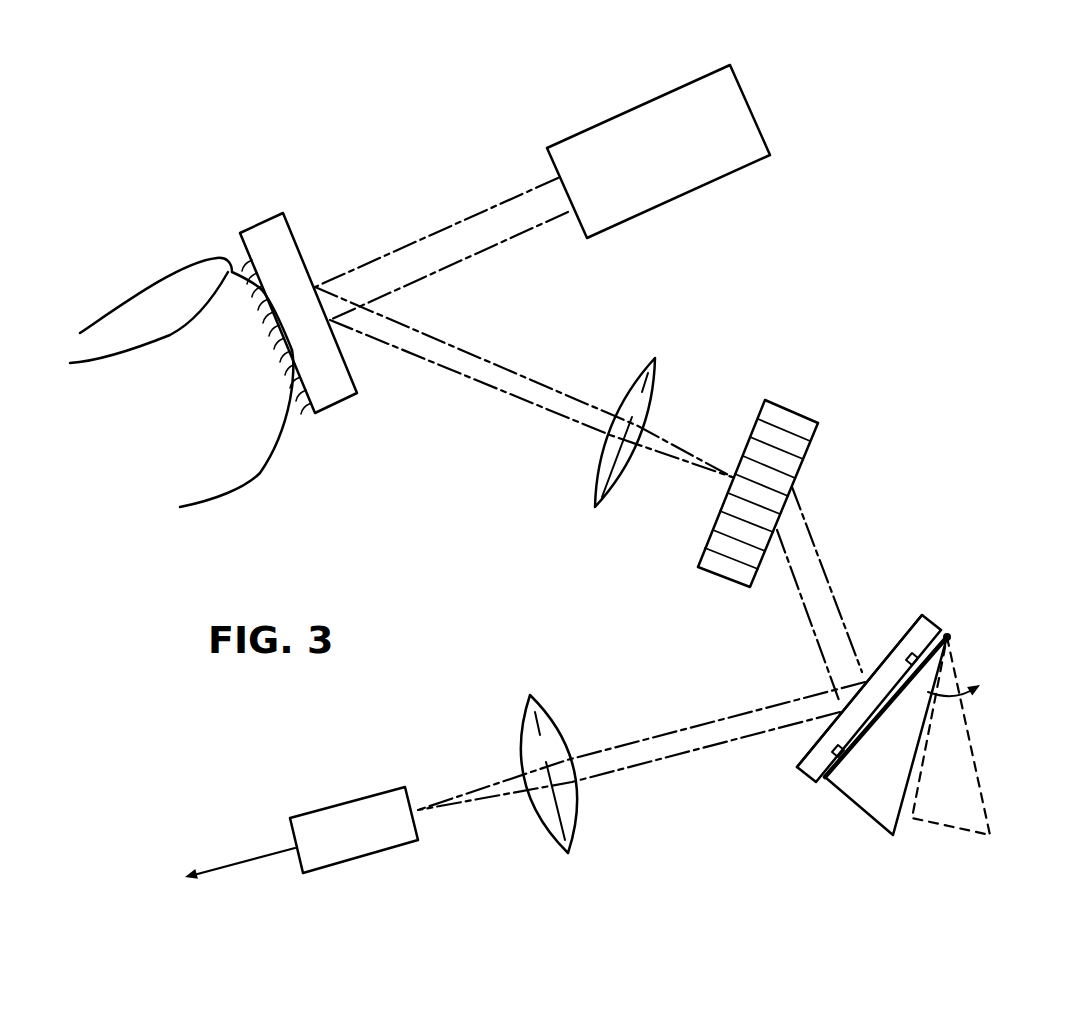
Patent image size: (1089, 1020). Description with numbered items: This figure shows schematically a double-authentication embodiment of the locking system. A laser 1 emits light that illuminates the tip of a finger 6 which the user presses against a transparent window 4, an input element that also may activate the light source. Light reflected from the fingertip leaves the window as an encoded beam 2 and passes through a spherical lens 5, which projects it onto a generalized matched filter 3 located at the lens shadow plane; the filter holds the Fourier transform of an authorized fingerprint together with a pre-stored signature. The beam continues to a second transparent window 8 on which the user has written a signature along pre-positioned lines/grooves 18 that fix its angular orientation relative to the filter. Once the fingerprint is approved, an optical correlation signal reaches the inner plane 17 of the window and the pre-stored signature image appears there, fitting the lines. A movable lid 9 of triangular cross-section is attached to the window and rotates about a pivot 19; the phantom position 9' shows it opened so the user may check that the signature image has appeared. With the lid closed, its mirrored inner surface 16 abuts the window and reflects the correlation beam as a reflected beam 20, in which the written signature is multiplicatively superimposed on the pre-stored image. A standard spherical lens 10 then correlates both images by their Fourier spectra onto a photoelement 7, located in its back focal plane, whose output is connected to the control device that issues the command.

The light source 1 is at (667, 200).
The encoded beam 2 is at (478, 367).
The matched filter 3 is at (720, 573).
The transparent window 4 is at (333, 400).
The spherical lens 5 is at (603, 492).
The finger 6 is at (177, 412).
The photoelement 7 is at (378, 852).
The second transparent window 8 is at (795, 785).
The movable lid 9 is at (882, 761).
The opened lid position 9' is at (965, 763).
The spherical lens 10 is at (573, 833).
The mirrored inner surface 16 is at (858, 760).
The inner plane 17 is at (888, 650).
The lines/grooves 18 is at (913, 655).
The pivot 19 is at (948, 637).
The reflected beam 20 is at (643, 747).